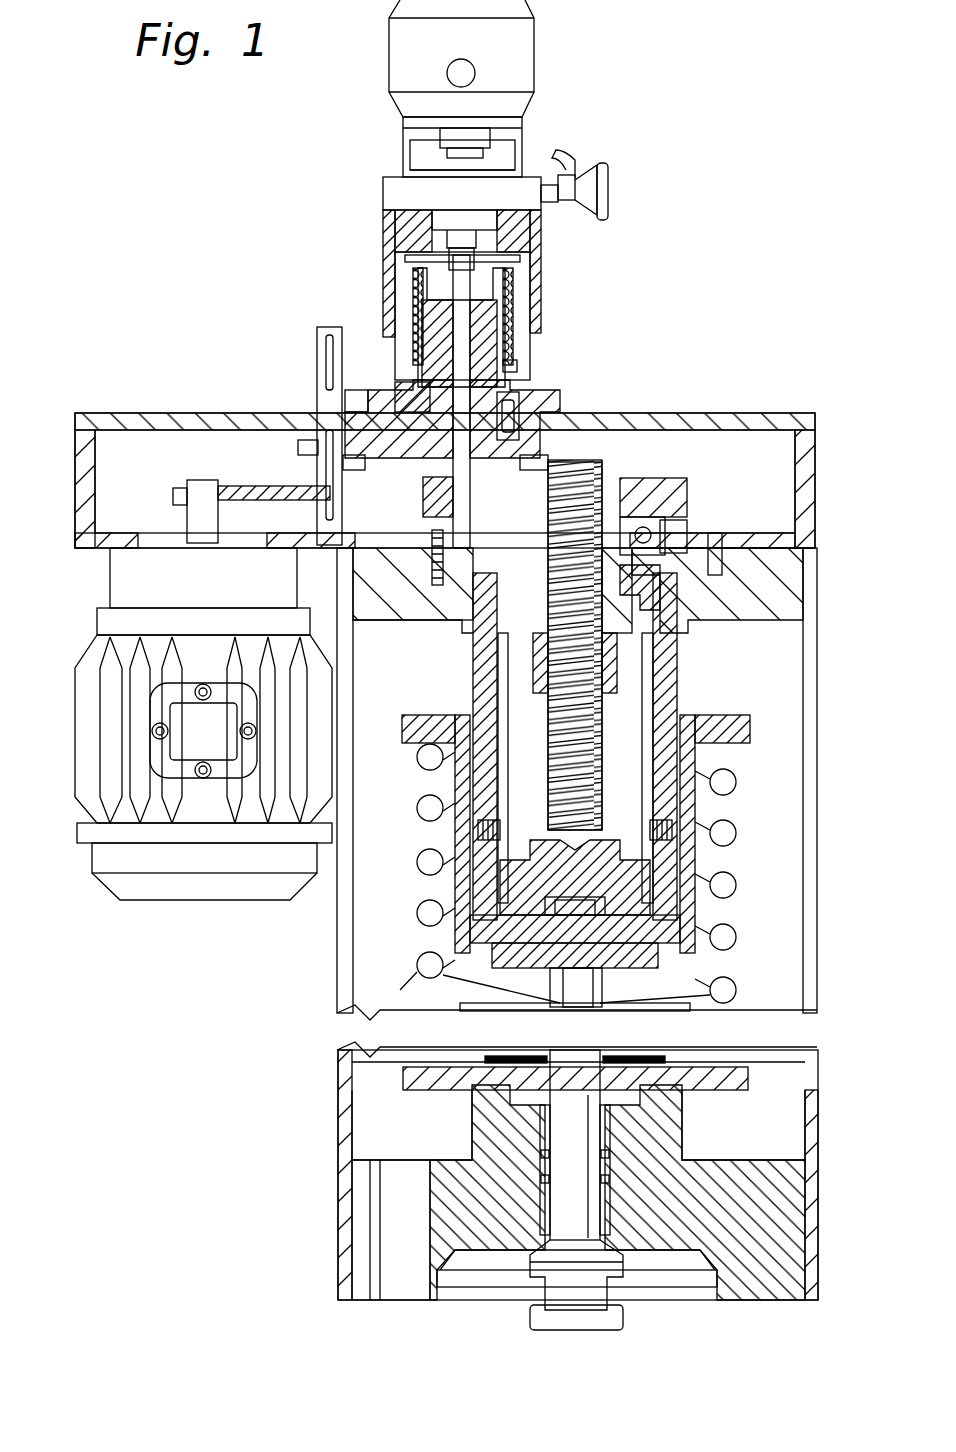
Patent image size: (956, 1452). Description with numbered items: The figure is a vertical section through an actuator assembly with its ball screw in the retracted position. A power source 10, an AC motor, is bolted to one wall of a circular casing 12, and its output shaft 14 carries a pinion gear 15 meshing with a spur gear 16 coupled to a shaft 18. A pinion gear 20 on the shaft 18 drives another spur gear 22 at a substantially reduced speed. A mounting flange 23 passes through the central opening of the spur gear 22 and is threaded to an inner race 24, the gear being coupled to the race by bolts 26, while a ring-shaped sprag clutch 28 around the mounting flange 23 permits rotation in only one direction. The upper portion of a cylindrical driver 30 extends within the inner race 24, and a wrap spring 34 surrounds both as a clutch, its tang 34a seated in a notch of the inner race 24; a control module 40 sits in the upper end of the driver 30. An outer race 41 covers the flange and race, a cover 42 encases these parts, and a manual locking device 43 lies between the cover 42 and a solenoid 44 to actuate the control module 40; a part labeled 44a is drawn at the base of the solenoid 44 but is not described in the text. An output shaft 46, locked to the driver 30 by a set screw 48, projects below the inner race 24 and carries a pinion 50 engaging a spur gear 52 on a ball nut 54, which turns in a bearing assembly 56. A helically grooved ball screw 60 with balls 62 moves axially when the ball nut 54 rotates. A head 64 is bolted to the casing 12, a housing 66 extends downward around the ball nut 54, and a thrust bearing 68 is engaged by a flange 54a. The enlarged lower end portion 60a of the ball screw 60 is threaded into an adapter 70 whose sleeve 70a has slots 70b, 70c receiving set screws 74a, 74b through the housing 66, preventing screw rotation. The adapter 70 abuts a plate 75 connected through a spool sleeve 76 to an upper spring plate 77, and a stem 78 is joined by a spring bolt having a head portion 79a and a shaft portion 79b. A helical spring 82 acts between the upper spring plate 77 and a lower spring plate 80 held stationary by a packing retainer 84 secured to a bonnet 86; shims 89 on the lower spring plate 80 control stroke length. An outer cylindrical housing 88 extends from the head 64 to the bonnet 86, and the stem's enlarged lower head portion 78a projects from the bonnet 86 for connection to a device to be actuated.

The power source 10 is at (88, 655).
The circular casing 12 is at (130, 413).
The output shaft 14 is at (198, 480).
The pinion gear 15 is at (173, 496).
The spur gear 16 is at (240, 486).
The shaft 18 is at (317, 345).
The pinion gear 20 is at (298, 447).
The spur gear 22 is at (343, 462).
The mounting flange 23 is at (548, 462).
The inner race 24 is at (395, 392).
The bolts 26 is at (545, 420).
The sprag clutch 28 is at (515, 400).
The cylindrical driver 30 is at (505, 312).
The wrap spring 34 is at (405, 258).
The tang 34a is at (517, 366).
The control module 40 is at (520, 258).
The outer race 41 is at (345, 398).
The cover 42 is at (383, 222).
The manual locking device 43 is at (403, 150).
The solenoid 44 is at (389, 42).
The coupling member 44a is at (470, 140).
The output shaft 46 is at (461, 340).
The set screw 48 is at (413, 335).
The pinion 50 is at (438, 520).
The spur gear 52 is at (670, 478).
The ball nut 54 is at (630, 478).
The flange 54a is at (660, 630).
The bearing assembly 56 is at (665, 532).
The ball screw 60 is at (602, 700).
The lower end portion 60a is at (575, 877).
The balls 62 is at (455, 765).
The head 64 is at (785, 585).
The housing 66 is at (473, 660).
The thrust bearing 68 is at (715, 570).
The adapter 70 is at (695, 900).
The sleeve 70a is at (617, 655).
The slot 70b is at (498, 720).
The slot 70c is at (653, 720).
The set screw 74a is at (478, 830).
The set screw 74b is at (672, 835).
The plate 75 is at (512, 968).
The spool sleeve 76 is at (695, 955).
The upper spring plate 77 is at (402, 725).
The stem 78 is at (577, 1180).
The lower head portion 78a is at (623, 1318).
The head portion 79a is at (560, 905).
The shaft portion 79b is at (585, 990).
The lower spring plate 80 is at (760, 1090).
The helical spring 82 is at (736, 782).
The packing retainer 84 is at (510, 1097).
The bonnet 86 is at (672, 1165).
The outer cylindrical housing 88 is at (817, 990).
The shims 89 is at (505, 1057).